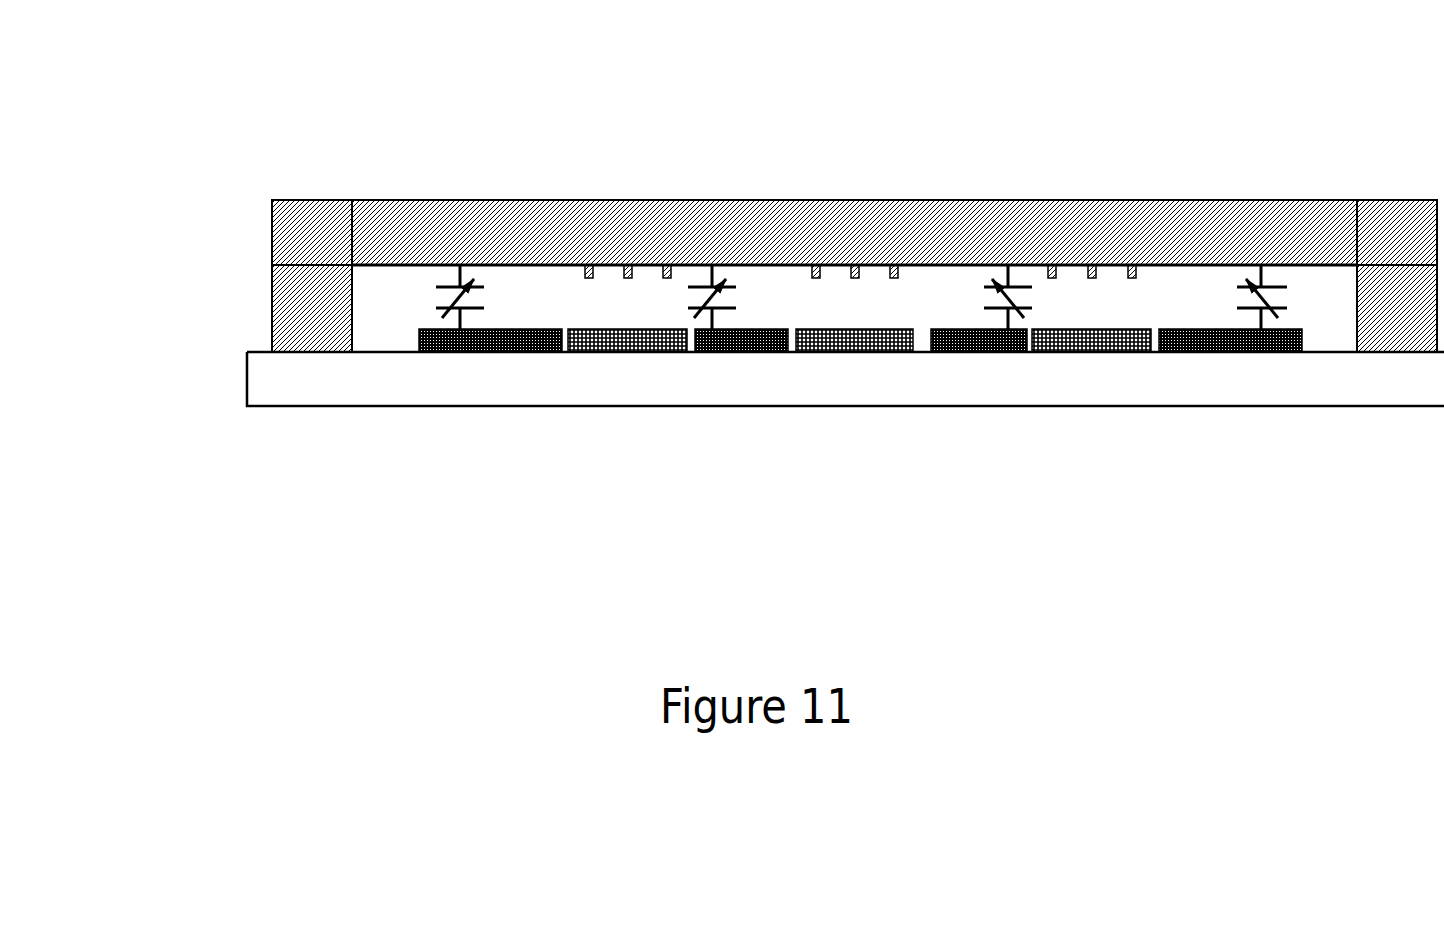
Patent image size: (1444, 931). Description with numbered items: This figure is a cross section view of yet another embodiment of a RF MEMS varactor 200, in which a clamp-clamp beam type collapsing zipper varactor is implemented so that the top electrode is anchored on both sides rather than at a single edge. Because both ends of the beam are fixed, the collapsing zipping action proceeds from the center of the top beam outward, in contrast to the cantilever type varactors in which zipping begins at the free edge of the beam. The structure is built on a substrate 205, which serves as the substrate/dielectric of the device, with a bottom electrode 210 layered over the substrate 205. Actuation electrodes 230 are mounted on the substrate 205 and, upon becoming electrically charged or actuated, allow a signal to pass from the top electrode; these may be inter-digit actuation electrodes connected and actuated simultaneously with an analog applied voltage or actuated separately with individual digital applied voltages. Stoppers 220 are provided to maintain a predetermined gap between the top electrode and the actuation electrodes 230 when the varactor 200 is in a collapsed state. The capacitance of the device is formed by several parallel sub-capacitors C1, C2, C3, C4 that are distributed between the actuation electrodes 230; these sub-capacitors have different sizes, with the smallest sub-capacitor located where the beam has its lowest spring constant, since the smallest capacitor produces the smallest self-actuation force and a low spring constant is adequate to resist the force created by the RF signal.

The RF MEMS varactor 200 is at (854, 249).
The substrate 205 is at (248, 368).
The bottom electrode 210 is at (270, 278).
The stoppers 220 is at (667, 264).
The actuation electrodes 230 is at (1035, 343).
The sub-capacitor C1 is at (1249, 297).
The sub-capacitor C2 is at (1009, 297).
The sub-capacitor C3 is at (725, 297).
The sub-capacitor C4 is at (473, 297).